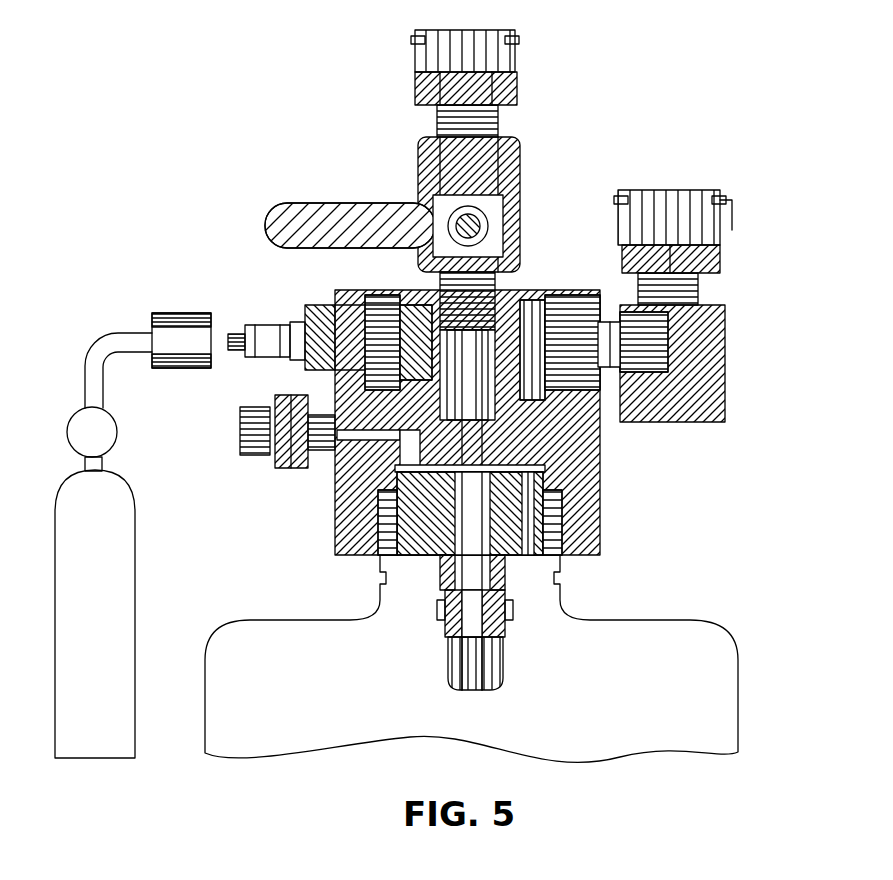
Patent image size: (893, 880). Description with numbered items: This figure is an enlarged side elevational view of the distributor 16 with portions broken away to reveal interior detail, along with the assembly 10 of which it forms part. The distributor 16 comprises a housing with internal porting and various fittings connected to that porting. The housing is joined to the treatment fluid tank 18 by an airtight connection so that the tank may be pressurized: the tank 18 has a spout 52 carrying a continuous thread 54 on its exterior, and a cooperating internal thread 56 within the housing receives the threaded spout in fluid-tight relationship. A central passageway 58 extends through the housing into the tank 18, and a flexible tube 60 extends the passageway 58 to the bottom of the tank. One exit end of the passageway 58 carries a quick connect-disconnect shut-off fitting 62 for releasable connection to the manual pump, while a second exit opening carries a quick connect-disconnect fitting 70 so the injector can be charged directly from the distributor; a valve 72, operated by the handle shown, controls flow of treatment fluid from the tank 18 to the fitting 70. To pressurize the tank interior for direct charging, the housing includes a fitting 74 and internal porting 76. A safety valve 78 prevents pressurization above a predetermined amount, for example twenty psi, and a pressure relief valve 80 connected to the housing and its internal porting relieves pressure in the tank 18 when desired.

The valve assembly 10 is at (702, 59).
The distributor 16 is at (553, 280).
The treatment fluid tank 18 is at (750, 705).
The spout 52 is at (600, 518).
The continuous thread 54 is at (600, 466).
The internal thread 56 is at (373, 537).
The central passageway 58 is at (600, 441).
The flexible tube 60 is at (510, 657).
The quick connect-disconnect shut-off fitting 62 is at (672, 205).
The quick connect-disconnect fitting 70 is at (515, 55).
The valve 72 is at (455, 215).
The fitting 74 is at (270, 322).
The internal porting 76 is at (345, 432).
The safety valve 78 is at (665, 335).
The pressure relief valve 80 is at (240, 433).